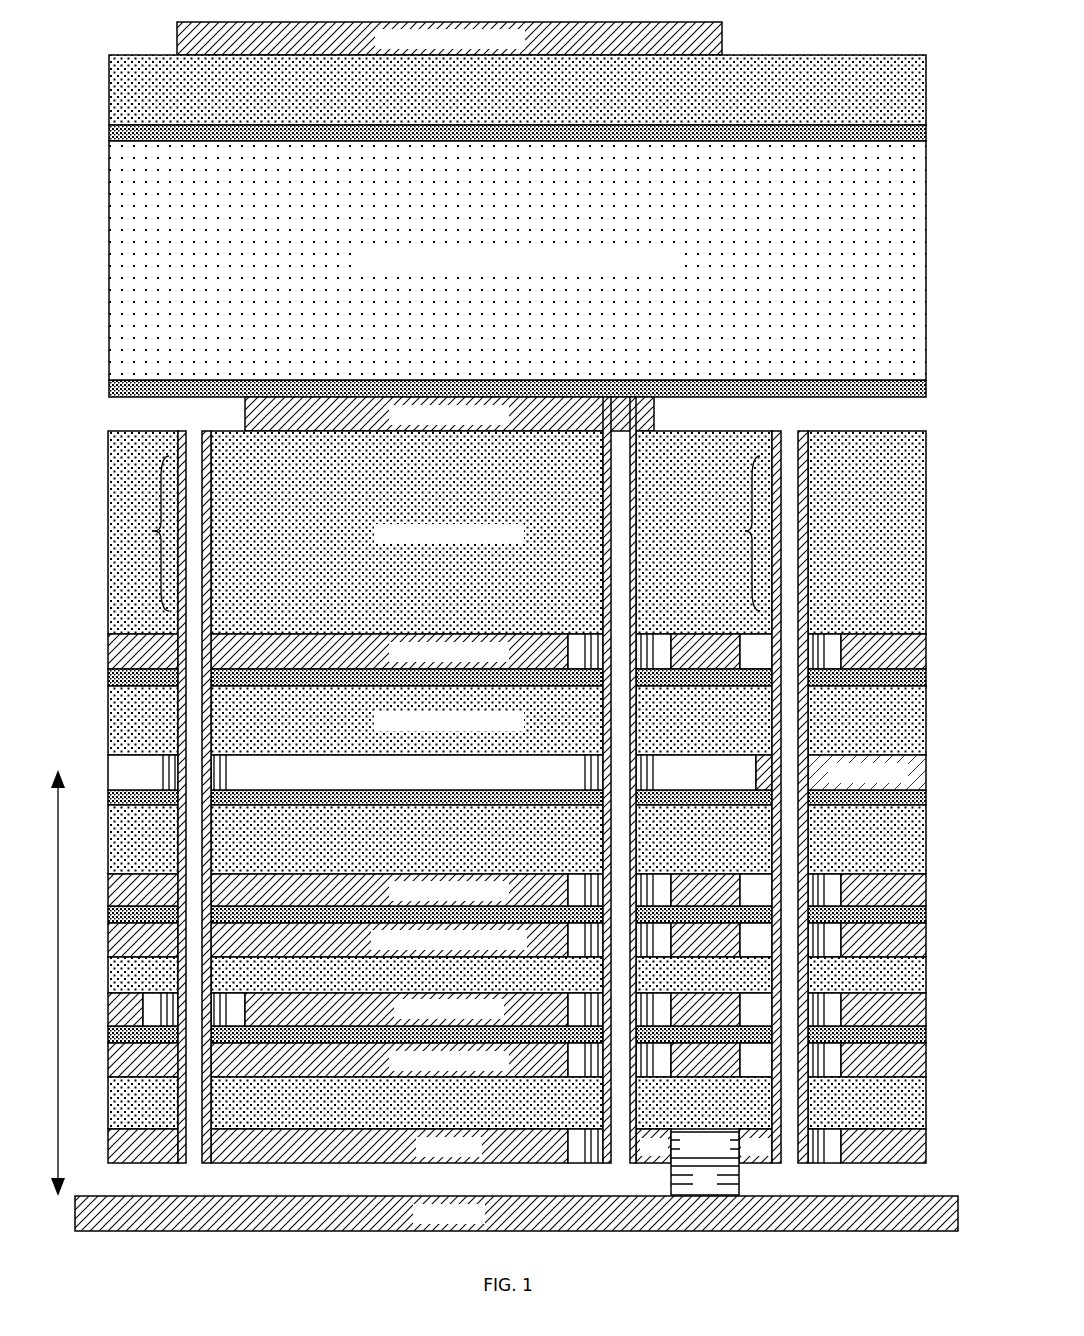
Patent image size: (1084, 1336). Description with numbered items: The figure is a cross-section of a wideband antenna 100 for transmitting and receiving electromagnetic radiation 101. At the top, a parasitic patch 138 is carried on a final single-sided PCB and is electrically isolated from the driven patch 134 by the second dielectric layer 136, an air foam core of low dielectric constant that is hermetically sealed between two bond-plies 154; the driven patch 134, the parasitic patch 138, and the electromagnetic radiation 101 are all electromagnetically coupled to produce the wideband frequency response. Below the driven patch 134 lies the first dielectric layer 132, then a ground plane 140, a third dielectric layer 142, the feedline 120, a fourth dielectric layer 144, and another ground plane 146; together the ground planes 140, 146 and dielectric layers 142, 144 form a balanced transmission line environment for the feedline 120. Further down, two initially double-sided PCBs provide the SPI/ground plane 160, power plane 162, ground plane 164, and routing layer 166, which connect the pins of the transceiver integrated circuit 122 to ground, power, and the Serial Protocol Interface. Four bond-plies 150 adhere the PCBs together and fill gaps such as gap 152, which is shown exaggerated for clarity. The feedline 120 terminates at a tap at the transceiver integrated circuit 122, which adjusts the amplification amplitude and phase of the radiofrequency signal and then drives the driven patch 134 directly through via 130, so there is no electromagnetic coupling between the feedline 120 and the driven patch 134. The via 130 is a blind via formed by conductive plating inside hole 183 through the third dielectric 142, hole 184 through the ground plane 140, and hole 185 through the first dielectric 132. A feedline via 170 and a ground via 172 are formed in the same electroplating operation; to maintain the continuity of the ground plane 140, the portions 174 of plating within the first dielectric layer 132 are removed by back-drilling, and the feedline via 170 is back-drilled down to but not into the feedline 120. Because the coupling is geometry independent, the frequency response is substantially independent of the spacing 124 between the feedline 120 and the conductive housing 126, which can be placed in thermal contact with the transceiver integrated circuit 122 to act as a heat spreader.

The wideband antenna 100 is at (509, 619).
The electromagnetic radiation 101 is at (520, 208).
The parasitic patch 138 is at (716, 33).
The bond-plies 154 is at (101, 128).
The second dielectric layer 136 is at (918, 280).
The driven patch 134 is at (648, 413).
The first dielectric layer 132 is at (918, 545).
The via 130 is at (628, 537).
The ground via 172 is at (203, 537).
The feedline via 170 is at (800, 537).
The portions of conductive plating 174 is at (436, 533).
The hole 185 is at (606, 452).
The hole 184 is at (606, 622).
The hole 183 is at (606, 698).
The ground plane 140 is at (918, 645).
The bond-plies 150 is at (101, 668).
The third dielectric layer 142 is at (918, 710).
The gap 152 is at (384, 773).
The feedline 120 is at (918, 764).
The fourth dielectric layer 144 is at (918, 828).
The ground plane 146 is at (918, 882).
The SPI/ground plane 160 is at (918, 932).
The power plane 162 is at (918, 1000).
The ground plane 164 is at (918, 1052).
The routing layer 166 is at (918, 1138).
The transceiver integrated circuit 122 is at (731, 1172).
The conductive housing 126 is at (72, 1188).
The spacing 124 is at (77, 983).